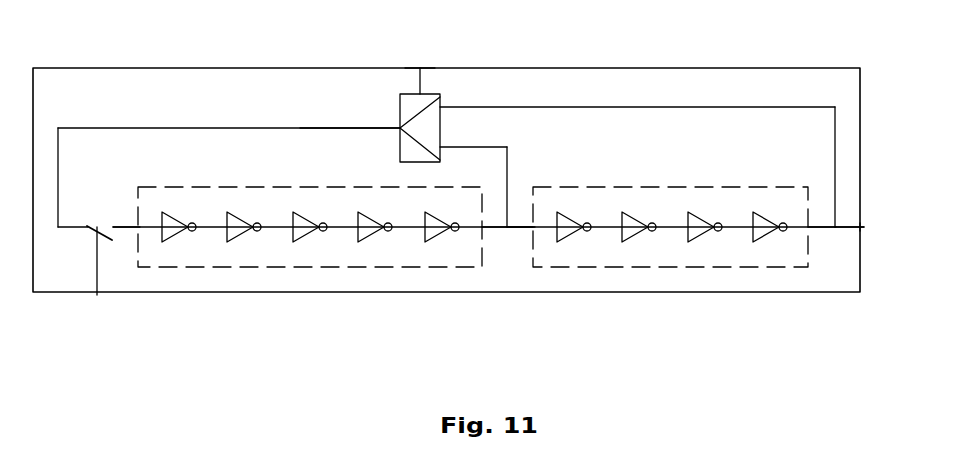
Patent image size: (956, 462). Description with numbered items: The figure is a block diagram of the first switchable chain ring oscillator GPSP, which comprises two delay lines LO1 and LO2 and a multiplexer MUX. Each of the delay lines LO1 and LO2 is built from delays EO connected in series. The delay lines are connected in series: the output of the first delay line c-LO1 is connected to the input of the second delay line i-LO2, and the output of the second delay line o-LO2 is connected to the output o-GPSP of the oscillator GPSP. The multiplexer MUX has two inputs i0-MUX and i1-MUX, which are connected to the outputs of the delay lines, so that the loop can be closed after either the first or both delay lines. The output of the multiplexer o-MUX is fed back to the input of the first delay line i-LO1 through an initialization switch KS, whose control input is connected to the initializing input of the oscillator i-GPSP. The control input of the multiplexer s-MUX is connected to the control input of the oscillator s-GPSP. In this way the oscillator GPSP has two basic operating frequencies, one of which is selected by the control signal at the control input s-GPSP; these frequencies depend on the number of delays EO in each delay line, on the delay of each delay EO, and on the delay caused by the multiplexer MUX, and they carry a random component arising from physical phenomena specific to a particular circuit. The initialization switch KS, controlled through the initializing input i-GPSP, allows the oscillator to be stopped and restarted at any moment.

The switchable chain ring oscillator GPSP is at (380, 293).
The multiplexer MUX is at (400, 125).
The output of the multiplexer o-MUX is at (400, 128).
The control input of the multiplexer s-MUX is at (419, 92).
The control input of the oscillator s-GPSP is at (420, 68).
The first input of the multiplexer i0-MUX is at (442, 107).
The second input of the multiplexer i1-MUX is at (443, 147).
The initialization switch KS is at (92, 230).
The initializing input of the oscillator i-GPSP is at (97, 293).
The first delay line LO1 is at (186, 186).
The input of the first delay line i-LO1 is at (140, 228).
The output of first delay chain c-LO1 is at (481, 228).
The second delay line LO2 is at (686, 187).
The input of the second delay line i-LO2 is at (534, 228).
The output of the second delay line o-LO2 is at (808, 228).
The output of the switchable chain ring oscillator o-GPSP is at (860, 228).
The delay EO is at (292, 212).